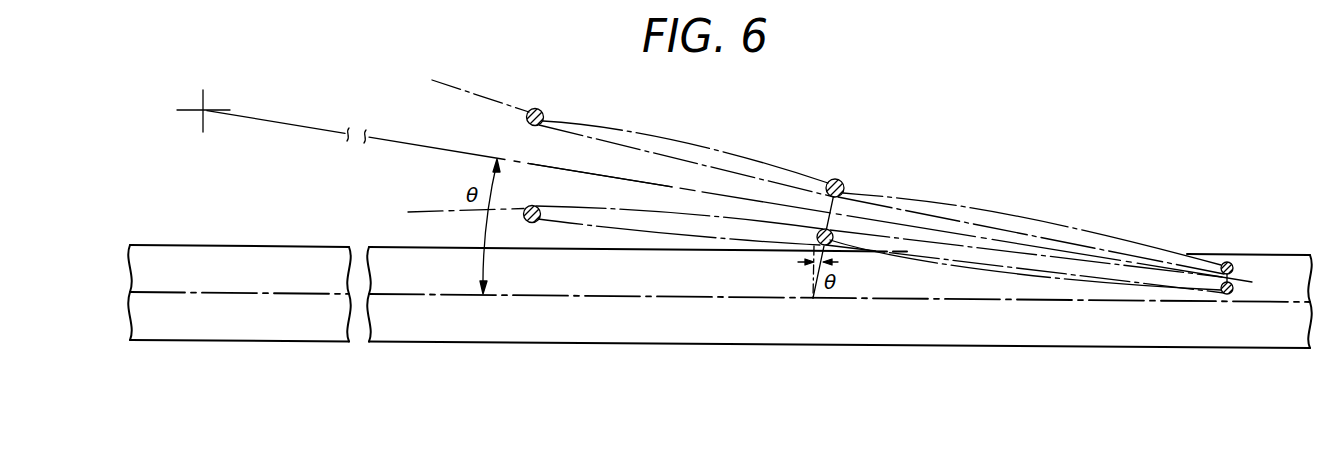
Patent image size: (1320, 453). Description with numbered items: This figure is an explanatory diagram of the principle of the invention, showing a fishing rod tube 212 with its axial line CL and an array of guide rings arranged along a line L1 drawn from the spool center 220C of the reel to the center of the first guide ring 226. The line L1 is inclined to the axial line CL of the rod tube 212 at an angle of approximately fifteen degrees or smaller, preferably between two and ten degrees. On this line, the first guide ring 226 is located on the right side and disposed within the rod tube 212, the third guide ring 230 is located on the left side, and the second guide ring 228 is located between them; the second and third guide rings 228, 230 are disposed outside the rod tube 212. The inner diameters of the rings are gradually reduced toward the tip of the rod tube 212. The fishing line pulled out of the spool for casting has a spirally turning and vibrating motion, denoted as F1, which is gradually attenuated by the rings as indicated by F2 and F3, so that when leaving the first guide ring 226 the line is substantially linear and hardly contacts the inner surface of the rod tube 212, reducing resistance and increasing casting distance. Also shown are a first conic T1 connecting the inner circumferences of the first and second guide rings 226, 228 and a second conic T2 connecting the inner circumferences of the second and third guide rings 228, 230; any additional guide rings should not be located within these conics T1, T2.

The rod tube 212 is at (655, 347).
The axial line of the rod tube CL is at (884, 302).
The spool center 220C is at (208, 106).
The line L1 is at (616, 177).
The third guide ring 230 is at (542, 110).
The second guide ring 228 is at (840, 179).
The first guide ring 226 is at (1227, 261).
The spirally turning and vibrating motion of the fishing line F1 is at (454, 86).
The attenuated fishing line motion F2 is at (746, 154).
The further attenuated fishing line motion F3 is at (1038, 217).
The first conic T1 is at (955, 219).
The second conic T2 is at (683, 159).